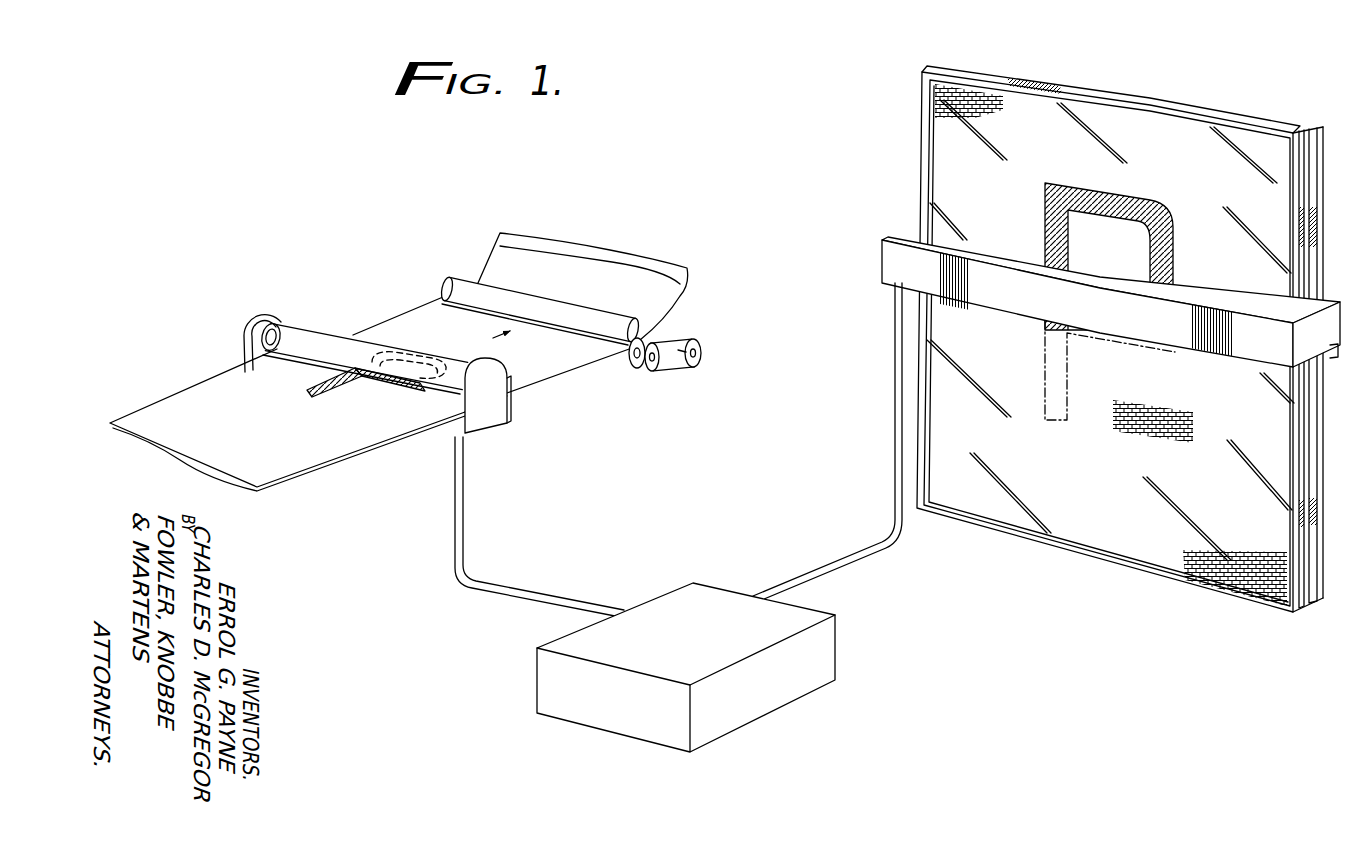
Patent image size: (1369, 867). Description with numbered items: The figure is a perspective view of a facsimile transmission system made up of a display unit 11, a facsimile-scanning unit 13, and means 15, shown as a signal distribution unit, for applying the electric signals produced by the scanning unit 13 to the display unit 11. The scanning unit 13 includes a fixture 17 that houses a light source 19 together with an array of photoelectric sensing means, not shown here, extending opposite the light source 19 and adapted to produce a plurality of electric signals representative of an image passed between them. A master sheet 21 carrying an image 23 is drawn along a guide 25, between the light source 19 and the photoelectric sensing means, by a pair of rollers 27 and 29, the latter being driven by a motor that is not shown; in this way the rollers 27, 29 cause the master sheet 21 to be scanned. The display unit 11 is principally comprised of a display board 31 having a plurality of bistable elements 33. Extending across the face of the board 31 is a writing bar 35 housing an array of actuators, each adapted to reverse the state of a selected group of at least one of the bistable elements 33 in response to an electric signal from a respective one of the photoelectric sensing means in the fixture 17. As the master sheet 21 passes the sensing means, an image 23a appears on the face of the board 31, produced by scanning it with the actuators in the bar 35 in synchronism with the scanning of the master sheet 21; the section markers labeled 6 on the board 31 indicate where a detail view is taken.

The display unit 11 is at (1105, 331).
The facsimile-scanning unit 13 is at (405, 362).
The means for applying the electric signals 15 is at (814, 599).
The fixture 17 is at (489, 433).
The light source 19 is at (316, 303).
The master sheet 21 is at (224, 388).
The image 23 is at (362, 383).
The image 23a is at (1150, 198).
The guide 25 is at (545, 380).
The roller 27 is at (528, 272).
The roller 29 is at (627, 368).
The display board 31 is at (1013, 517).
The bistable elements 33 is at (941, 104).
The writing bar 35 is at (1243, 277).
The section line indicator 6 is at (1082, 225).